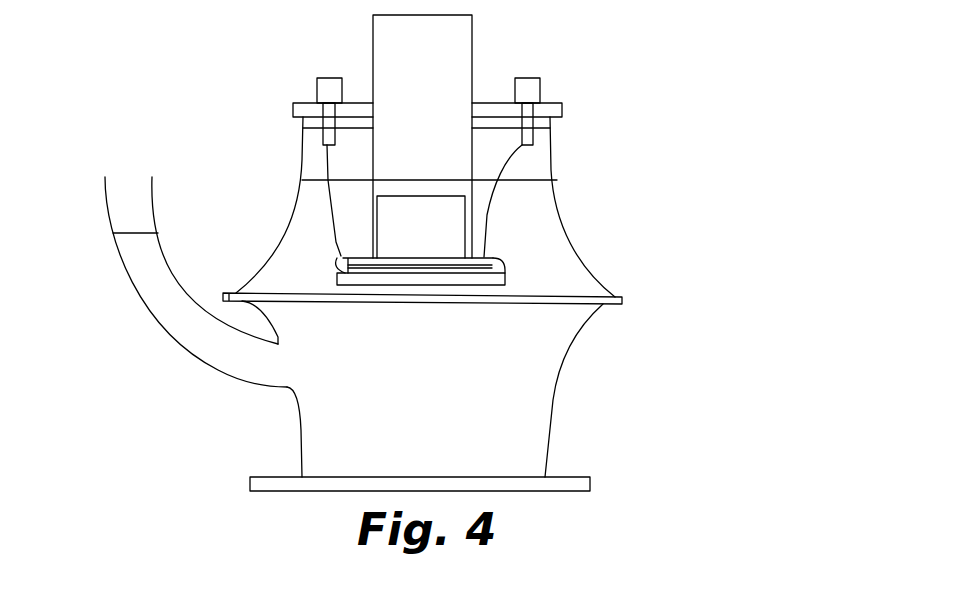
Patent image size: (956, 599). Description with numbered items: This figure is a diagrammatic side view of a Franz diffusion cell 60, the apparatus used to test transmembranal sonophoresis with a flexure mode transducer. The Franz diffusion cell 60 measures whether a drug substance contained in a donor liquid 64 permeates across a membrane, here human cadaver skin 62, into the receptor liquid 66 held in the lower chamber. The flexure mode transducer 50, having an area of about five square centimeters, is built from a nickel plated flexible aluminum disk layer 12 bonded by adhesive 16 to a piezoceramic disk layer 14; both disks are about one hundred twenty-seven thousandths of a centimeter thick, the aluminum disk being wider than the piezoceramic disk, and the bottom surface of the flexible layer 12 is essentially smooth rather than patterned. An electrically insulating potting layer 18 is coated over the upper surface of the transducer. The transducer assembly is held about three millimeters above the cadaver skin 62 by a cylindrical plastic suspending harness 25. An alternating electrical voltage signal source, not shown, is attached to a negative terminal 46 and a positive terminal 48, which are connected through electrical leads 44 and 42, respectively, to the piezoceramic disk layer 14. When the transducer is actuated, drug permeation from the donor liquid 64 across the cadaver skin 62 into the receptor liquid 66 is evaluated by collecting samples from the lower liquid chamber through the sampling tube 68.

The flexible aluminum disk layer 12 is at (493, 286).
The piezoceramic disk layer 14 is at (492, 258).
The adhesive 16 is at (505, 270).
The electrically insulating potting layer 18 is at (352, 258).
The cylindrical plastic suspending harness 25 is at (377, 226).
The electrical lead 42 is at (492, 205).
The electrical lead 44 is at (327, 200).
The negative terminal 46 is at (329, 88).
The positive terminal 48 is at (527, 88).
The flexure mode transducer 50 is at (378, 291).
The Franz diffusion cell 60 is at (262, 421).
The cadaver skin 62 is at (412, 301).
The donor liquid 64 is at (270, 276).
The receptor liquid 66 is at (538, 425).
The sampling tube 68 is at (113, 239).